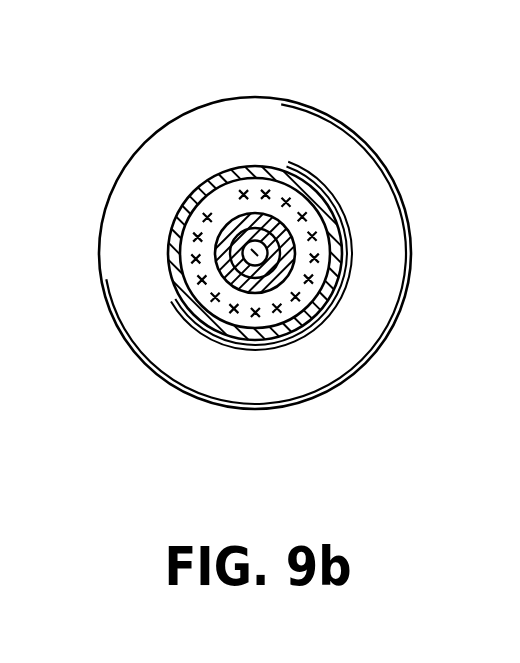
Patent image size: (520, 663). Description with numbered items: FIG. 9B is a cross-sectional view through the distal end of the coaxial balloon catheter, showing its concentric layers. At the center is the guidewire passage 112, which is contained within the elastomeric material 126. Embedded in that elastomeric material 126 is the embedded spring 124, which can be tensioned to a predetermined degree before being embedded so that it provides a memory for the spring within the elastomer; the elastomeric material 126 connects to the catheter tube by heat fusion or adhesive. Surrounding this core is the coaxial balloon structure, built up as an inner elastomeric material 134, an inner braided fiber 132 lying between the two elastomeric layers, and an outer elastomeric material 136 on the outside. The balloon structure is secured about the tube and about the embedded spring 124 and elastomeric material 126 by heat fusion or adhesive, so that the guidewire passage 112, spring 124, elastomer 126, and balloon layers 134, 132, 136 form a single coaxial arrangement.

The guidewire passage 112 is at (243, 240).
The embedded spring 124 is at (255, 232).
The elastomeric material 126 is at (236, 260).
The inner braided fiber 132 is at (312, 268).
The inner elastomeric material 134 is at (258, 274).
The outer elastomeric material 136 is at (365, 140).